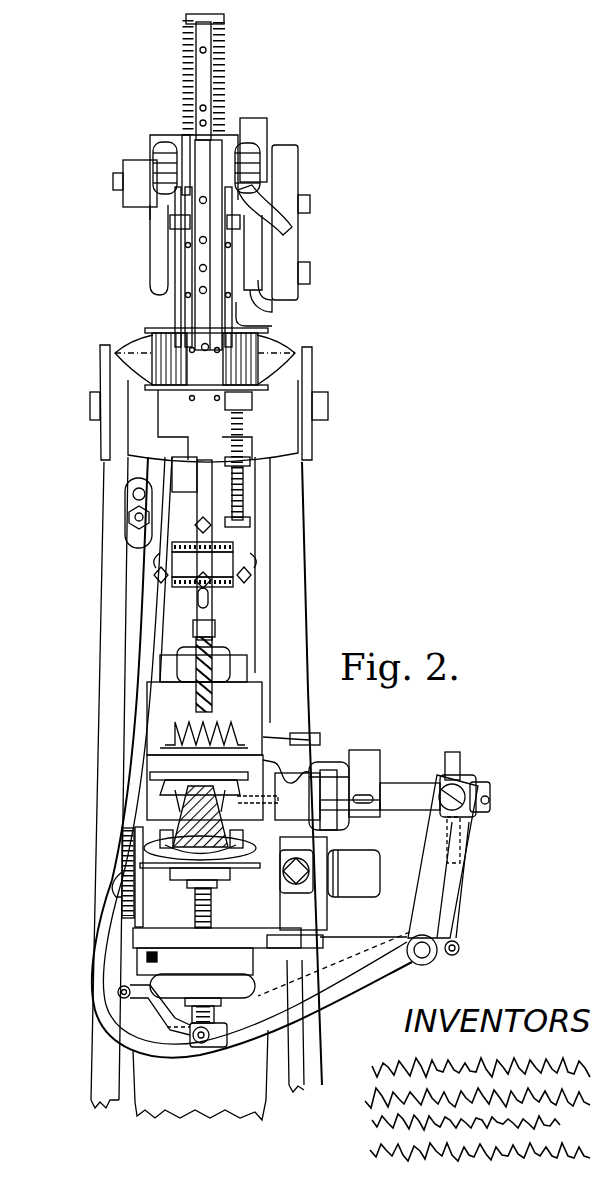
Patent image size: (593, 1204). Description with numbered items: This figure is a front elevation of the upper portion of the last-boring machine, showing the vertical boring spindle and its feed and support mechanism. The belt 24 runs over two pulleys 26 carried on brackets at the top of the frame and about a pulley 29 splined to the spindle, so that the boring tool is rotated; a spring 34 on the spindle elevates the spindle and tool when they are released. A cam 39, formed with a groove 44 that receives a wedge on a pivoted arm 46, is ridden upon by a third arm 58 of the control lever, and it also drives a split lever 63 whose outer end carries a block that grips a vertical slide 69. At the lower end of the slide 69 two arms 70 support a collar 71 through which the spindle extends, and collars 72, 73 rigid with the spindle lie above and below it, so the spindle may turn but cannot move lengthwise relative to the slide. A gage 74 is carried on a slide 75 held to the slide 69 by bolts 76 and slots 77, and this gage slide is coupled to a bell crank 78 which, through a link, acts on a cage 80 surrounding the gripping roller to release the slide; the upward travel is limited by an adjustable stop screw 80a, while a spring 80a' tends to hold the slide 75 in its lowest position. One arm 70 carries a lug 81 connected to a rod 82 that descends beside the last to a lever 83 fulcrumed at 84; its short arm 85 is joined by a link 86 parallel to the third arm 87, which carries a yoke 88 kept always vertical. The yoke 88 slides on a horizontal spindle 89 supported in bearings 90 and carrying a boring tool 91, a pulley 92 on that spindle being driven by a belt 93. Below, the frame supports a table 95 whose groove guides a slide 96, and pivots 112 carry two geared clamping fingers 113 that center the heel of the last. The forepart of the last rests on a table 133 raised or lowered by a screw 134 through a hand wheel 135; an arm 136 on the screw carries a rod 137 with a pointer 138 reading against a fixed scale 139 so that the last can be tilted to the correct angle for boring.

The belt 24 is at (300, 493).
The pulleys 26 is at (295, 434).
The pulley 29 is at (258, 327).
The spring 34 is at (213, 58).
The cam 39 is at (290, 160).
The groove 44 is at (268, 150).
The arm 46 is at (240, 312).
The third arm 58 is at (258, 292).
The split lever 63 is at (152, 275).
The slide 69 is at (140, 395).
The arms 70 is at (166, 540).
The collar 71 is at (240, 560).
The collar 72 is at (160, 578).
The collar 73 is at (252, 590).
The gage 74 is at (196, 628).
The gage slide 75 is at (208, 92).
The bolts 76 is at (256, 566).
The slots 77 is at (212, 600).
The bell crank 78 is at (195, 178).
The cage 80 is at (237, 493).
The adjustable stop screw 80a is at (292, 459).
The spring 80a' is at (155, 128).
The lug 81 is at (130, 494).
The rod 82 is at (126, 728).
The lever 83 is at (358, 985).
The fulcrum 84 is at (430, 952).
The short arm 85 is at (460, 950).
The link 86 is at (470, 878).
The third arm 87 is at (438, 904).
The yoke 88 is at (462, 762).
The spindle 89 is at (414, 810).
The bearings 90 is at (366, 785).
The boring tool 91 is at (270, 795).
The pulley 92 is at (336, 760).
The belt 93 is at (360, 772).
The table 95 is at (232, 940).
The slide 96 is at (358, 938).
The pivots 112 is at (160, 856).
The clamping fingers 113 is at (168, 832).
The table 133 is at (195, 874).
The screw 134 is at (195, 912).
The hand wheel 135 is at (165, 982).
The arm 136 is at (178, 1030).
The rod 137 is at (143, 968).
The pointer 138 is at (122, 843).
The scale 139 is at (115, 886).